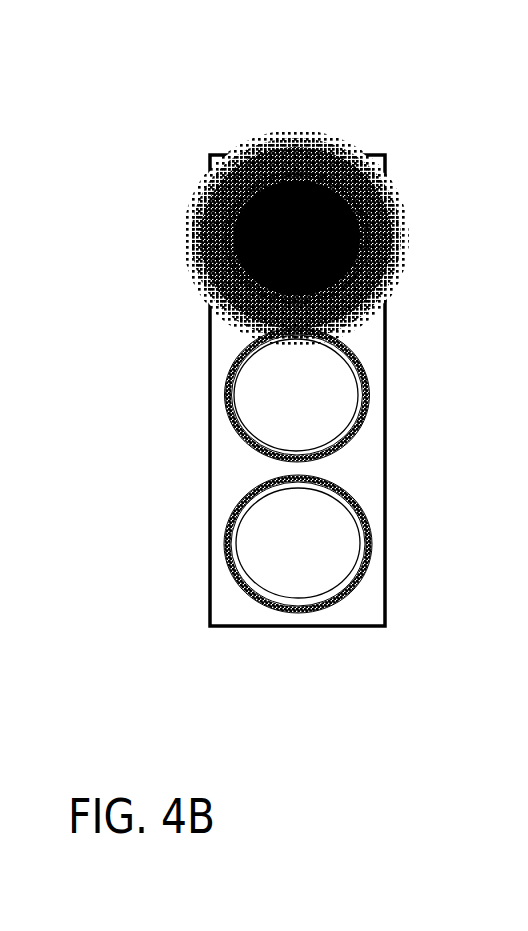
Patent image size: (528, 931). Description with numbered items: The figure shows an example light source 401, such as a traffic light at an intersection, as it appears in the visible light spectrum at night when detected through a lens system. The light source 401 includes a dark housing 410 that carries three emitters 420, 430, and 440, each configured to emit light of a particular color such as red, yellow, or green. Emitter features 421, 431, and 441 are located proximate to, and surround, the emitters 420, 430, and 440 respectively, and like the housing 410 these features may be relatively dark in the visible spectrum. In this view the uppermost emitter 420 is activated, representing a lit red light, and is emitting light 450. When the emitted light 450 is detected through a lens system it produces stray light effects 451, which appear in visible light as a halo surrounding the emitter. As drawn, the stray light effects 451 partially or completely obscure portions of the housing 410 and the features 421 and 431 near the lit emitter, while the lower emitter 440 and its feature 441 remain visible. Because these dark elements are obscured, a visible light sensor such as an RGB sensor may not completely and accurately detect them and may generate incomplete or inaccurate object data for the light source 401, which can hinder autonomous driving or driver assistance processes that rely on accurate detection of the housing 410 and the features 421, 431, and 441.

The light source 401 is at (142, 88).
The housing 410 is at (386, 540).
The emitter 420 is at (240, 265).
The emitter feature 421 is at (235, 220).
The emitter 430 is at (258, 418).
The emitter feature 431 is at (227, 379).
The emitter 440 is at (268, 555).
The emitter feature 441 is at (240, 511).
The emitted light 450 is at (358, 214).
The stray light effects 451 is at (398, 223).